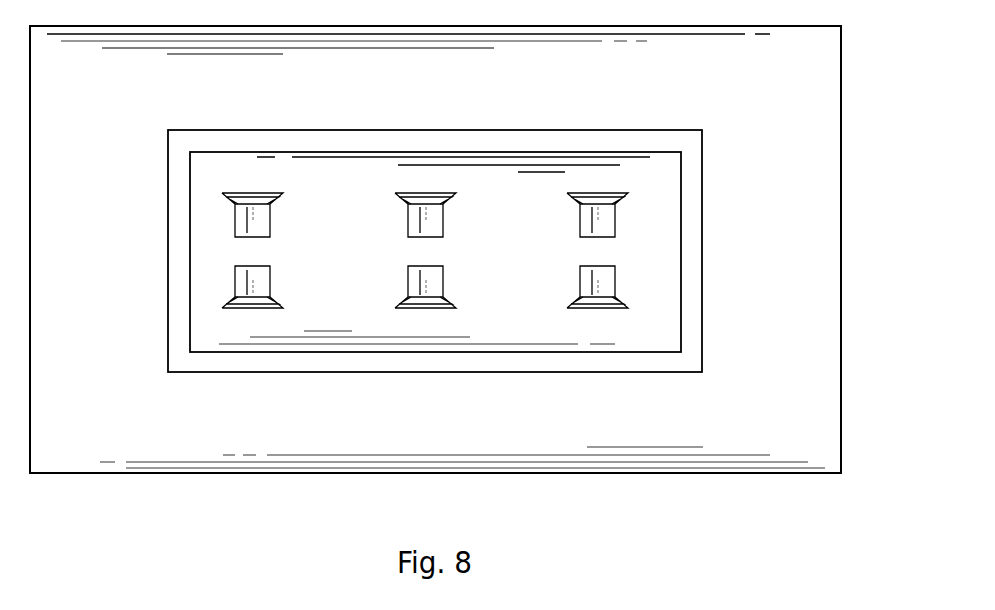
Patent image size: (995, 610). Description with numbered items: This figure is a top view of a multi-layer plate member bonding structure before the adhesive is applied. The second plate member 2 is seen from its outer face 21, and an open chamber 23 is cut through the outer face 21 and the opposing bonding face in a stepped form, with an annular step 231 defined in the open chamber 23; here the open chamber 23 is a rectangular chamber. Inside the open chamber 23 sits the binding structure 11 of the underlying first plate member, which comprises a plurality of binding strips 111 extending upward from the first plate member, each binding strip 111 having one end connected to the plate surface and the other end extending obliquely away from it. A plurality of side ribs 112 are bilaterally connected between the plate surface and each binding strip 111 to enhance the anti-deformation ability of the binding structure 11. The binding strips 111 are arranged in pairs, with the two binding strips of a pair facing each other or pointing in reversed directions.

The second plate member 2 is at (716, 475).
The outer face 21 is at (817, 228).
The open chamber 23 is at (675, 303).
The annular step 231 is at (693, 190).
The binding structure 11 is at (456, 193).
The binding strip 111 is at (238, 280).
The side rib 112 is at (232, 300).